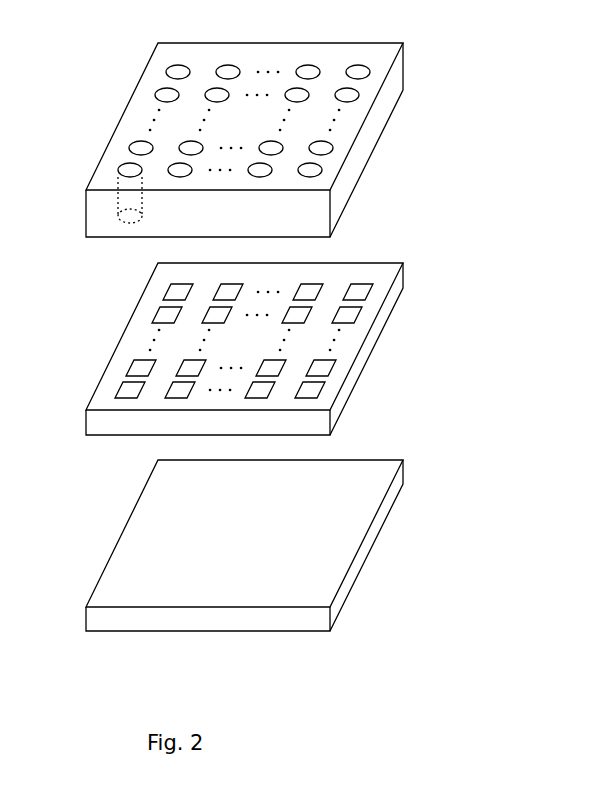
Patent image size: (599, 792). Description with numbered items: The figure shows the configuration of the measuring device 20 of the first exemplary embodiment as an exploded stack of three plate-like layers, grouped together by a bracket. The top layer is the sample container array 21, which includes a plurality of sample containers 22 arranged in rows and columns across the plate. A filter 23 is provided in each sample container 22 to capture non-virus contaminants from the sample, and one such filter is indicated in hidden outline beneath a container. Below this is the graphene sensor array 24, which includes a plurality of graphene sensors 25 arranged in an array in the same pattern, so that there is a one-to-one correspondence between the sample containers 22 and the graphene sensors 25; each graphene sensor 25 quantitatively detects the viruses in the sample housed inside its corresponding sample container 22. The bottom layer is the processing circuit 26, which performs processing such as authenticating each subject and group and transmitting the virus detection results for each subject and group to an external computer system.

The measuring device 20 is at (504, 111).
The sample container array 21 is at (260, 140).
The sample container 22 is at (120, 166).
The filter 23 is at (120, 200).
The graphene sensor array 24 is at (265, 349).
The graphene sensor 25 is at (122, 391).
The processing circuit 26 is at (382, 527).